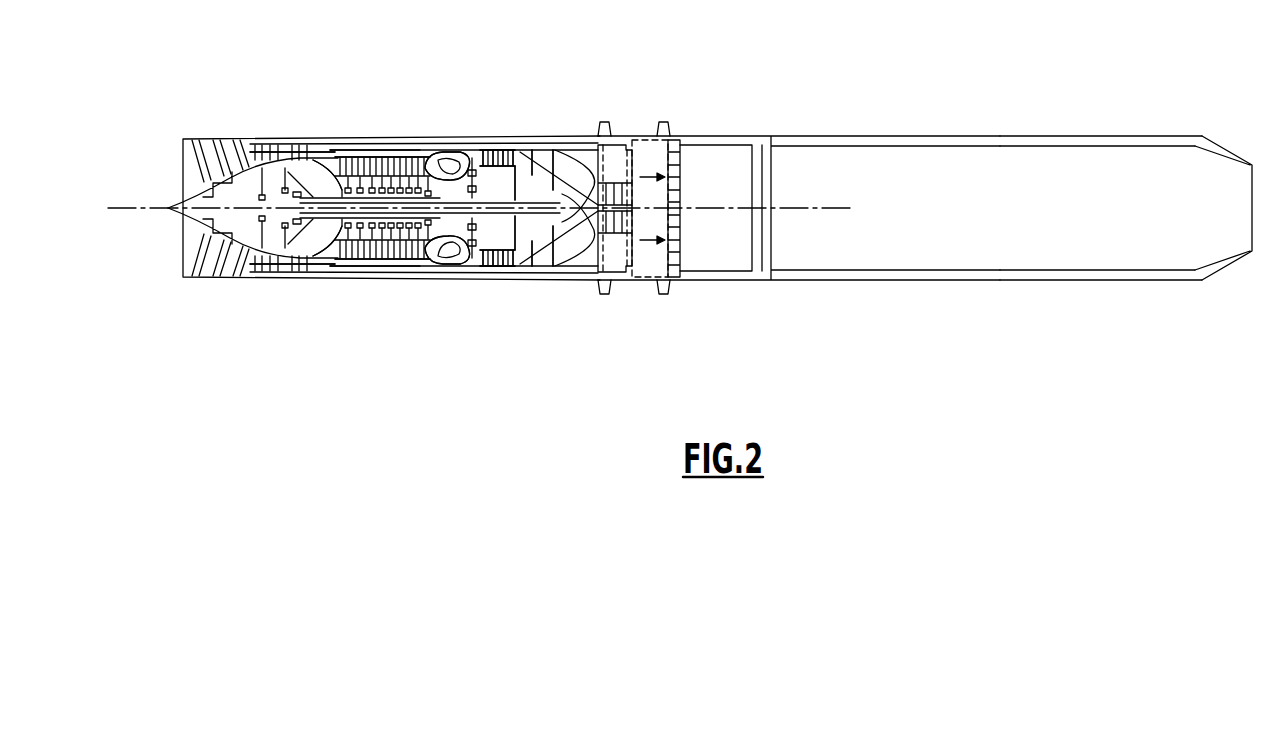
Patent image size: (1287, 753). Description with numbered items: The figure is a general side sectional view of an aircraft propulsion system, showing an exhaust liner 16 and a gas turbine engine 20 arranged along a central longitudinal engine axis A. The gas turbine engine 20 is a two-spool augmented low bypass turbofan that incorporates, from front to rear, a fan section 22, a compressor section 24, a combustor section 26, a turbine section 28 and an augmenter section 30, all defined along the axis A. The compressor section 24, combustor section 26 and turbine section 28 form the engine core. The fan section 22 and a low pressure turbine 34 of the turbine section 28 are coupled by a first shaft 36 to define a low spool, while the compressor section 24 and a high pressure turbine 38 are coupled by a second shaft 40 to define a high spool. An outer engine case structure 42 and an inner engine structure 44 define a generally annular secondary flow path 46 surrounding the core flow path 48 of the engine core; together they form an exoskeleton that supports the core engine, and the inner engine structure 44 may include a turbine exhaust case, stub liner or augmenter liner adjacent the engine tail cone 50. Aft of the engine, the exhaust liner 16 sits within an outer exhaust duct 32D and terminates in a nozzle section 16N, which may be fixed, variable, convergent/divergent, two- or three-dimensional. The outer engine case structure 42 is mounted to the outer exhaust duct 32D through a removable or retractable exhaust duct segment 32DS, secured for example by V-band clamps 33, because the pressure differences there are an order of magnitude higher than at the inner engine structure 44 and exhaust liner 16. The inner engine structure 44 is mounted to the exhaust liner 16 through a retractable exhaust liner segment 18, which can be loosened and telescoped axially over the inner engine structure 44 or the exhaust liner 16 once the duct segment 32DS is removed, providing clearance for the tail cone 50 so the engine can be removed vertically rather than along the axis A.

The central longitudinal engine axis A is at (123, 209).
The exhaust liner 16 is at (1047, 271).
The nozzle section 16N is at (1211, 146).
The retractable exhaust liner segment 18 is at (617, 146).
The gas turbine engine 20 is at (474, 97).
The fan section 22 is at (253, 294).
The compressor section 24 is at (372, 294).
The combustor section 26 is at (449, 297).
The turbine section 28 is at (524, 299).
The augmenter section 30 is at (570, 162).
The outer exhaust duct 32D is at (827, 135).
The exhaust duct segment 32DS is at (638, 299).
The V-band clamps 33 is at (604, 122).
The low pressure turbine 34 is at (497, 262).
The first shaft 36 is at (322, 178).
The high pressure turbine 38 is at (478, 258).
The second shaft 40 is at (447, 177).
The outer engine case structure 42 is at (321, 272).
The inner engine structure 44 is at (386, 258).
The secondary flow path 46 is at (347, 273).
The core flow path 48 is at (318, 268).
The engine tail cone 50 is at (570, 262).